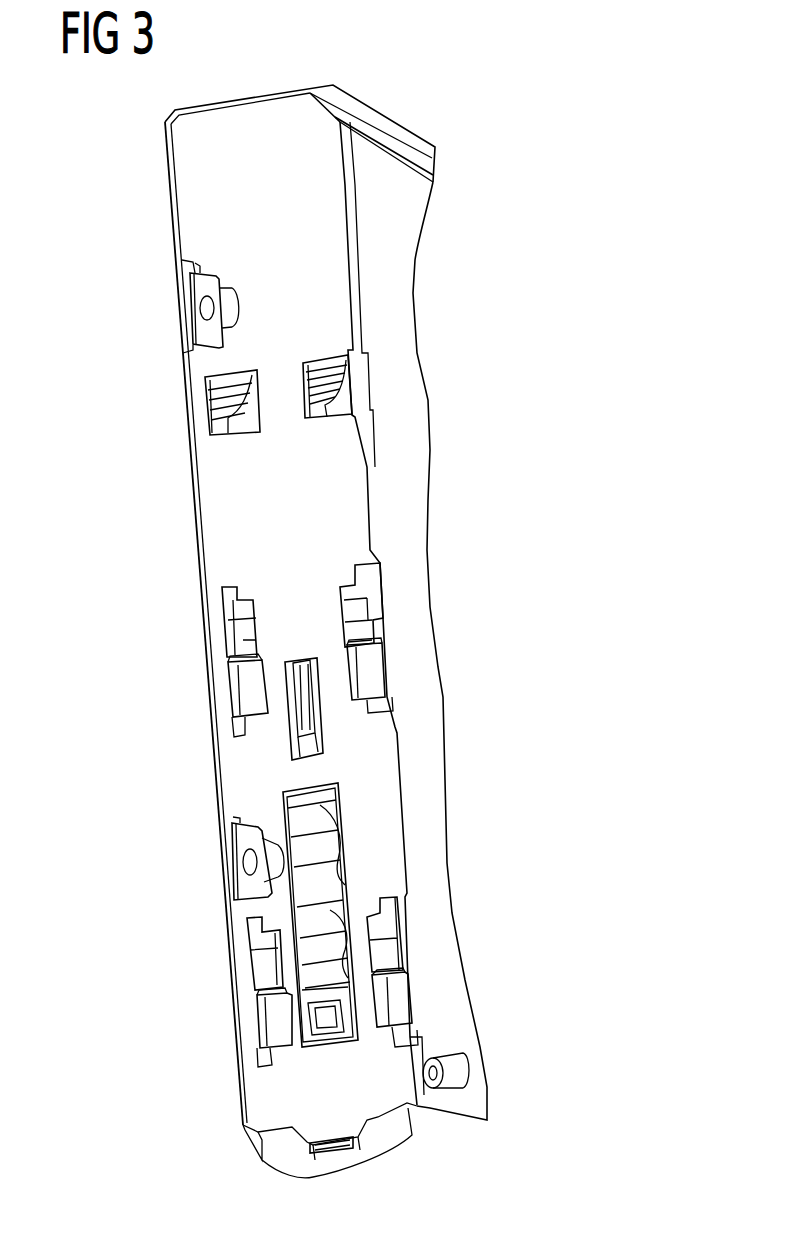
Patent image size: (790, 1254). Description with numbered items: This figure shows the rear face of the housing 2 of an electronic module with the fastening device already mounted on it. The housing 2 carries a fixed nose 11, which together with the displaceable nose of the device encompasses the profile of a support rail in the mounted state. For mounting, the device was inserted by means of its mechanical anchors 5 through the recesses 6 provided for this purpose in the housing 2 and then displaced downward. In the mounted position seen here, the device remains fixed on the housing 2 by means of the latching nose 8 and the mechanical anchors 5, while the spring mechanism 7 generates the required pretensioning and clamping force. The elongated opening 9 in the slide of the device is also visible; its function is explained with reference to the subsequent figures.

The housing 2 is at (478, 482).
The mechanical anchors 5 is at (257, 692).
The recesses 6 is at (237, 613).
The spring mechanism 7 is at (317, 877).
The latching nose 8 is at (297, 715).
The elongated opening 9 is at (330, 1143).
The fixed nose 11 is at (330, 387).